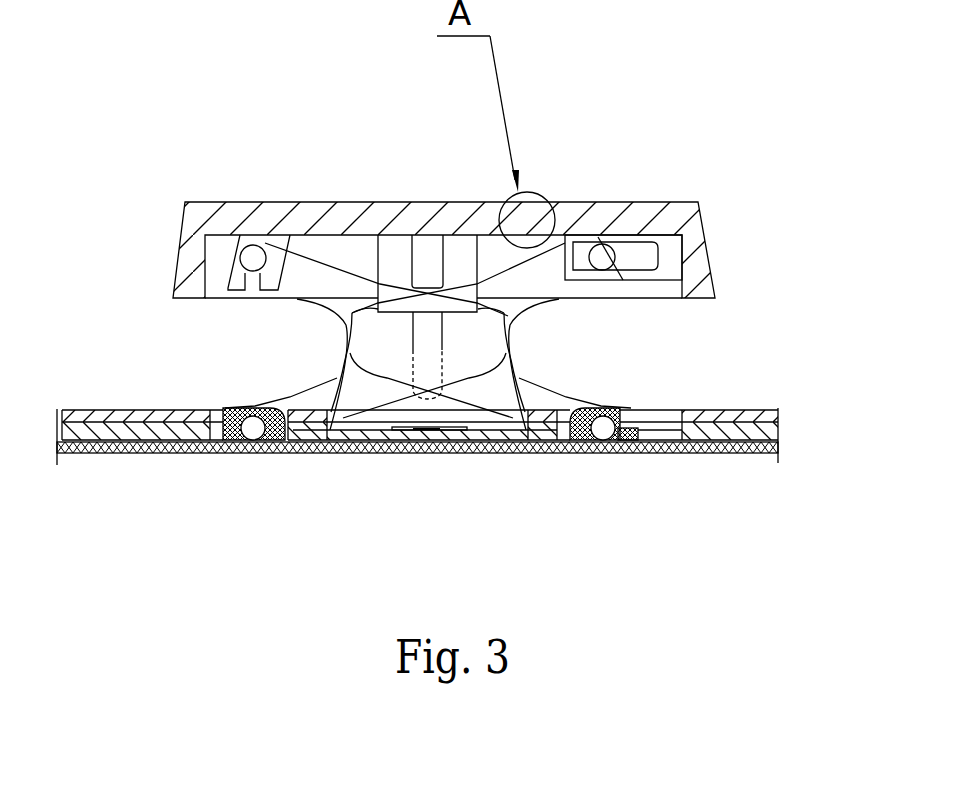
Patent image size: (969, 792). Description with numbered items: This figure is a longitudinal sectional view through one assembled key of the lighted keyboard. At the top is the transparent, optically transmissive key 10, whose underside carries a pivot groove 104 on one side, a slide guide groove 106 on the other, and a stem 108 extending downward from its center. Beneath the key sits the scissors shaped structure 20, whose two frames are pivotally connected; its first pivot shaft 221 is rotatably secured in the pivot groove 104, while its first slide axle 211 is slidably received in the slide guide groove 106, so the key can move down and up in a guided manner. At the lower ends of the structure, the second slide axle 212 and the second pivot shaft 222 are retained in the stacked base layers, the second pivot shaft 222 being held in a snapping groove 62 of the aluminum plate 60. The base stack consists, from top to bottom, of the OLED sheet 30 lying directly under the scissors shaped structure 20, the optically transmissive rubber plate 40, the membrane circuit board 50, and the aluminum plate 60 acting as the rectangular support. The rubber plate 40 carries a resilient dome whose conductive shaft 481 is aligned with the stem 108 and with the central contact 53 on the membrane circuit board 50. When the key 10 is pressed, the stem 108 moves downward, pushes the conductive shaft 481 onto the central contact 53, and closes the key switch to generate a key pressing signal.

The optically transmissive key 10 is at (700, 212).
The pivot groove 104 is at (250, 278).
The first pivot shaft 221 is at (255, 252).
The stem 108 is at (425, 247).
The first slide axle 211 is at (602, 252).
The slide guide groove 106 is at (635, 255).
The scissors shaped structure 20 is at (262, 360).
The conductive shaft 481 is at (430, 370).
The OLED sheet 30 is at (778, 428).
The rubber plate 40 is at (780, 413).
The membrane circuit board 50 is at (780, 437).
The aluminum plate 60 is at (780, 450).
The second slide axle 212 is at (250, 428).
The second pivot shaft 222 is at (613, 404).
The snapping groove 62 is at (630, 428).
The central contact 53 is at (420, 430).